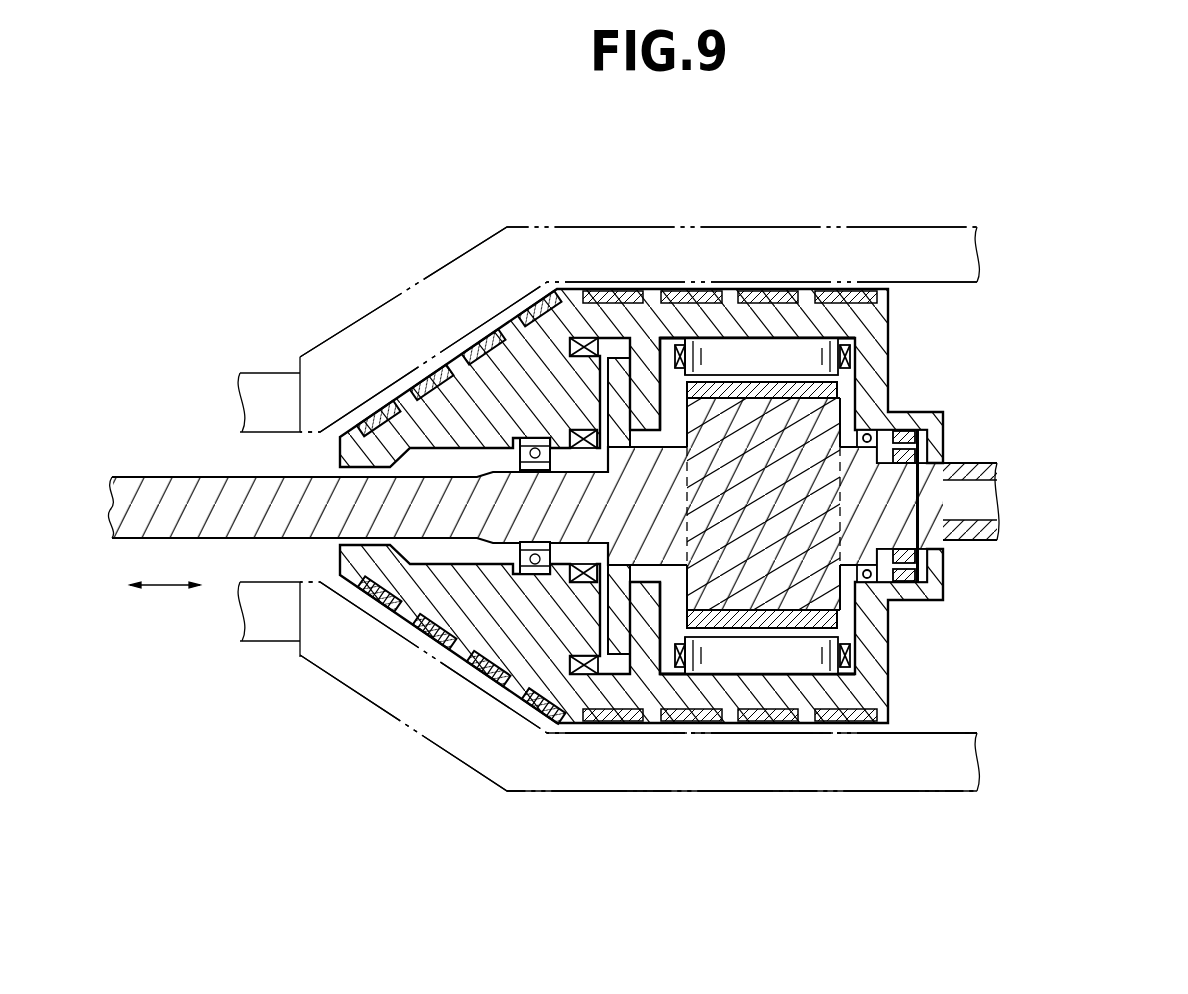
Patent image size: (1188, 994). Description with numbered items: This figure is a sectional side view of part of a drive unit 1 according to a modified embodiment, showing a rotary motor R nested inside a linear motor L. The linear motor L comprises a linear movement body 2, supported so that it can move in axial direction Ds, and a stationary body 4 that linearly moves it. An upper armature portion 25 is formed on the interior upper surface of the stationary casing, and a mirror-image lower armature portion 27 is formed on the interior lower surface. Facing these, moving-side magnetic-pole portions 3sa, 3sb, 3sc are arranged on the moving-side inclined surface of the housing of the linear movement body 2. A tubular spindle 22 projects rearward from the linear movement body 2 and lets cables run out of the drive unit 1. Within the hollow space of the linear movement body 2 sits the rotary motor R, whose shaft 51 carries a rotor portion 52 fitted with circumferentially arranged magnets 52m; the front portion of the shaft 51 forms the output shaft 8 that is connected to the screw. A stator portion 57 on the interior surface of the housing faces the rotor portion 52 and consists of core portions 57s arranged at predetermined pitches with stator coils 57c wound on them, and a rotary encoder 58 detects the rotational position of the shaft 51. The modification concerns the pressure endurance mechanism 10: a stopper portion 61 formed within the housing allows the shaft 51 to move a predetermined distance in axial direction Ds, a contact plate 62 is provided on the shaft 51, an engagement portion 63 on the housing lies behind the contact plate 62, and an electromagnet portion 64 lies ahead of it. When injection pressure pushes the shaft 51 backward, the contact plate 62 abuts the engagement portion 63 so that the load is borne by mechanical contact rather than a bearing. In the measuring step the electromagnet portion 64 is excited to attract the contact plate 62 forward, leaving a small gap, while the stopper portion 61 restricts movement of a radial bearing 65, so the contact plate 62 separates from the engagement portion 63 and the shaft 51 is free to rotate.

The drive unit 1 is at (1012, 252).
The linear movement body 2 is at (903, 678).
The stationary body 4 is at (832, 222).
The output shaft 8 is at (152, 476).
The pressure endurance mechanism 10 is at (610, 686).
The spindle 22 is at (981, 542).
The armature portion 25 is at (908, 284).
The armature portion 27 is at (946, 730).
The moving-side magnetic-pole portion 3sa is at (367, 413).
The moving-side magnetic-pole portion 3sb is at (422, 372).
The moving-side magnetic-pole portion 3sc is at (455, 340).
The shaft 51 is at (578, 556).
The rotor portion 52 is at (845, 595).
The magnets 52m is at (806, 628).
The stator portion 57 is at (787, 680).
The stator coils 57c is at (682, 670).
The core portions 57s is at (742, 676).
The rotary encoder 58 is at (925, 450).
The stopper portion 61 is at (513, 553).
The contact plate 62 is at (617, 357).
The engagement portion 63 is at (660, 372).
The electromagnet portion 64 is at (578, 335).
The radial bearing 65 is at (593, 582).
The axial direction Ds is at (162, 594).
The rotary motor R is at (900, 372).
The linear motor L is at (765, 806).